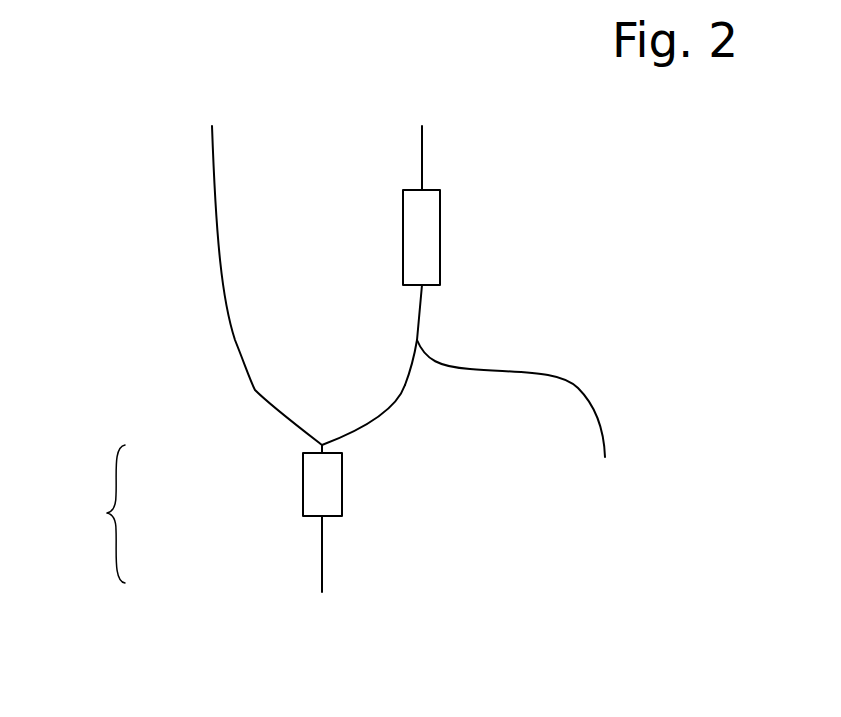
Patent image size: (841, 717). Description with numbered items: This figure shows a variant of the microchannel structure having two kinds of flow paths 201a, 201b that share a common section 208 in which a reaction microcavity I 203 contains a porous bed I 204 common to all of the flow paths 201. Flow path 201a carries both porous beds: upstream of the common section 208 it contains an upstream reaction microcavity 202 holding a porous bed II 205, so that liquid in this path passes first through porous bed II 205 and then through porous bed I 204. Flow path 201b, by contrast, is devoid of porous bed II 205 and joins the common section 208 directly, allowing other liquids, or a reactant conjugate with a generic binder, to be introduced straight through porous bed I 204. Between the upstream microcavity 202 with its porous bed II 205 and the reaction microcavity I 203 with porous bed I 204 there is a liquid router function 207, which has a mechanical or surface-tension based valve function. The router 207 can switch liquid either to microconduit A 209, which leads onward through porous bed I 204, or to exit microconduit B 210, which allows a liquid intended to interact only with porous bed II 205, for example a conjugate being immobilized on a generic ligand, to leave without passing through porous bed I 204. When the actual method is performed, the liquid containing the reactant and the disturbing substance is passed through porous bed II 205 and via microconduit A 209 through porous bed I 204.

The flow path 201a is at (423, 153).
The flow path 201b is at (212, 173).
The flow paths 201 is at (323, 550).
The upstream reaction microcavity 202 is at (402, 484).
The porous bed I 204 is at (330, 493).
The reaction microcavity I 203 is at (522, 237).
The porous bed II 205 is at (427, 242).
The liquid router function 207 is at (414, 336).
The common section 208 is at (85, 514).
The microconduit A 209 is at (384, 398).
The exit microconduit B 210 is at (563, 375).